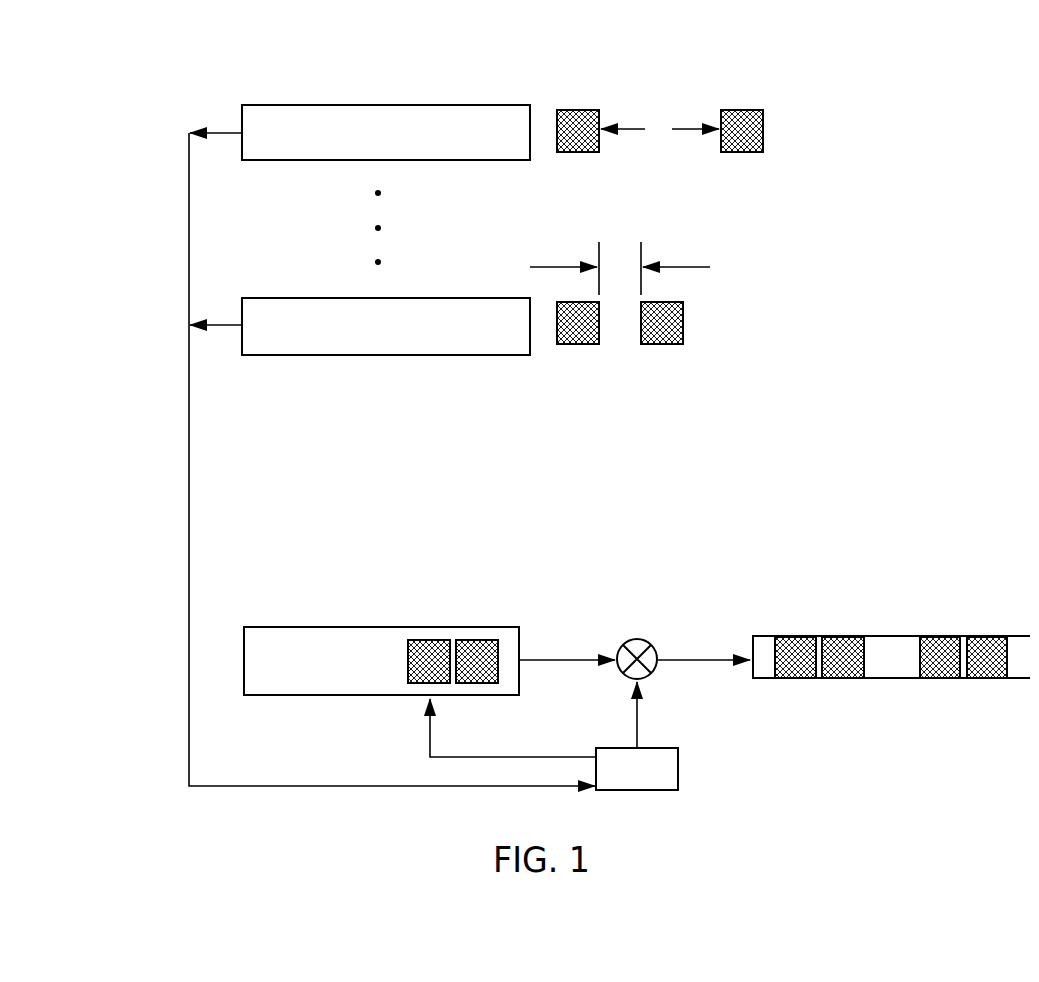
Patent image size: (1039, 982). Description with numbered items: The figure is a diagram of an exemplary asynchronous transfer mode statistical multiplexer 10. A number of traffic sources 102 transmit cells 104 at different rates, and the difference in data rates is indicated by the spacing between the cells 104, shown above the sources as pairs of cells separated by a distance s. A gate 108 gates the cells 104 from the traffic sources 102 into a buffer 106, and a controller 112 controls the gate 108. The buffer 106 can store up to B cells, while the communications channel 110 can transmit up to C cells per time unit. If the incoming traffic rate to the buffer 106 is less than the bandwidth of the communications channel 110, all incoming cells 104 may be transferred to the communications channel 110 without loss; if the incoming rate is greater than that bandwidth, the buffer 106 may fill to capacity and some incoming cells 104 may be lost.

The asynchronous transfer mode multiplexer 10 is at (859, 86).
The traffic sources 102 is at (173, 105).
The cells 104 is at (762, 102).
The buffer 106 is at (519, 615).
The gate 108 is at (640, 638).
The communications channel 110 is at (1028, 622).
The controller 112 is at (637, 736).